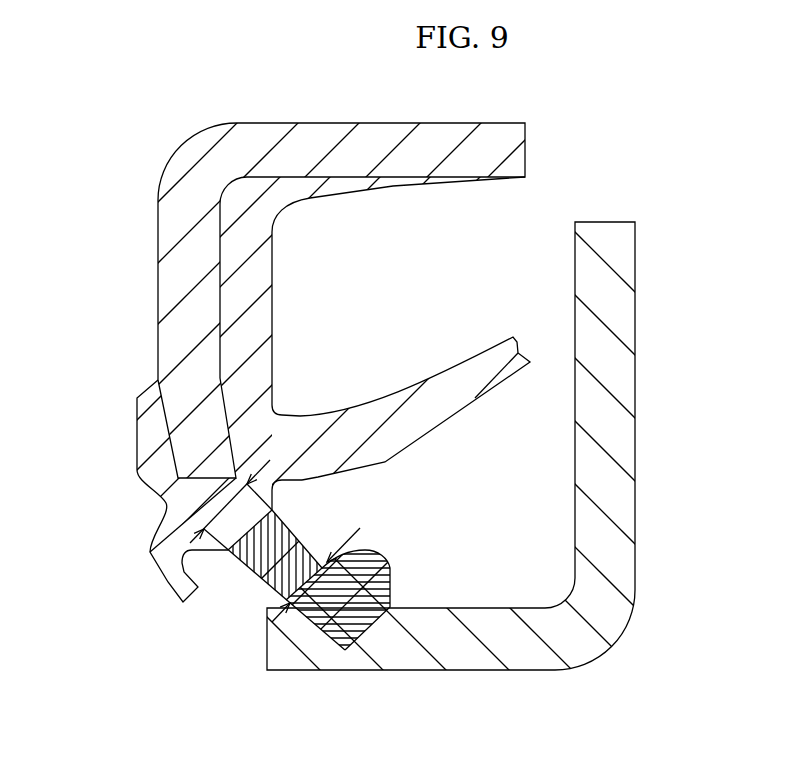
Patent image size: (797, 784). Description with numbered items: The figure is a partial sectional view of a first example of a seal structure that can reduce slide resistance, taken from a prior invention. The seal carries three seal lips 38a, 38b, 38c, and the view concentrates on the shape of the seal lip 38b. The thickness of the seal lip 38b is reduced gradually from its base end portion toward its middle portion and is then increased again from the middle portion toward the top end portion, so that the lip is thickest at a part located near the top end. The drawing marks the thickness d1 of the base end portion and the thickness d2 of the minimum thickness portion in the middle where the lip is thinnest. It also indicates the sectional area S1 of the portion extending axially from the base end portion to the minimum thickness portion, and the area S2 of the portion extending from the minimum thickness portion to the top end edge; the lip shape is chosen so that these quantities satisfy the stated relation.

The seal lip 38a is at (475, 373).
The seal lip 38b is at (392, 560).
The seal lip 38c is at (186, 585).
The sectional area S1 is at (233, 566).
The area S2 is at (372, 578).
The thickness of base end portion d1 is at (228, 518).
The thickness of minimum thickness portion d2 is at (305, 536).